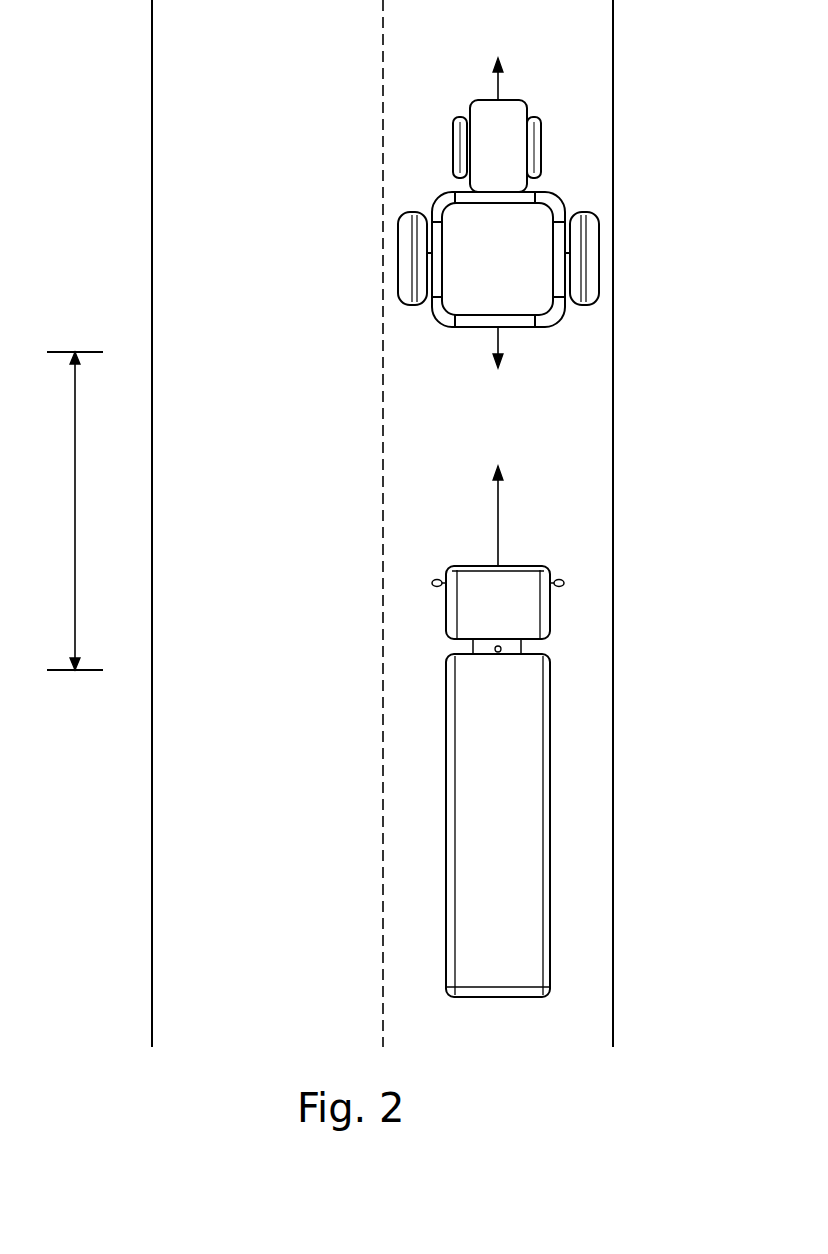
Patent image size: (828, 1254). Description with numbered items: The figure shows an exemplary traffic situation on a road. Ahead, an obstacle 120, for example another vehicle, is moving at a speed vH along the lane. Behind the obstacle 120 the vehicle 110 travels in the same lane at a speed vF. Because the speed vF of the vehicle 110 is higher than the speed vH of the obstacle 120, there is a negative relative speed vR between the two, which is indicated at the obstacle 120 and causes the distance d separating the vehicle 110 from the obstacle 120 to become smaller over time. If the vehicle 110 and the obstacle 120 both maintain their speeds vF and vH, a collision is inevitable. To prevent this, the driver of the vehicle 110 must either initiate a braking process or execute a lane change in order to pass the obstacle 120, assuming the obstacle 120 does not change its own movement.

The vehicle 110 is at (498, 703).
The obstacle 120 is at (500, 242).
The speed of the obstacle vH is at (500, 78).
The relative speed vR is at (500, 343).
The speed of the vehicle vF is at (500, 515).
The distance d is at (74, 511).